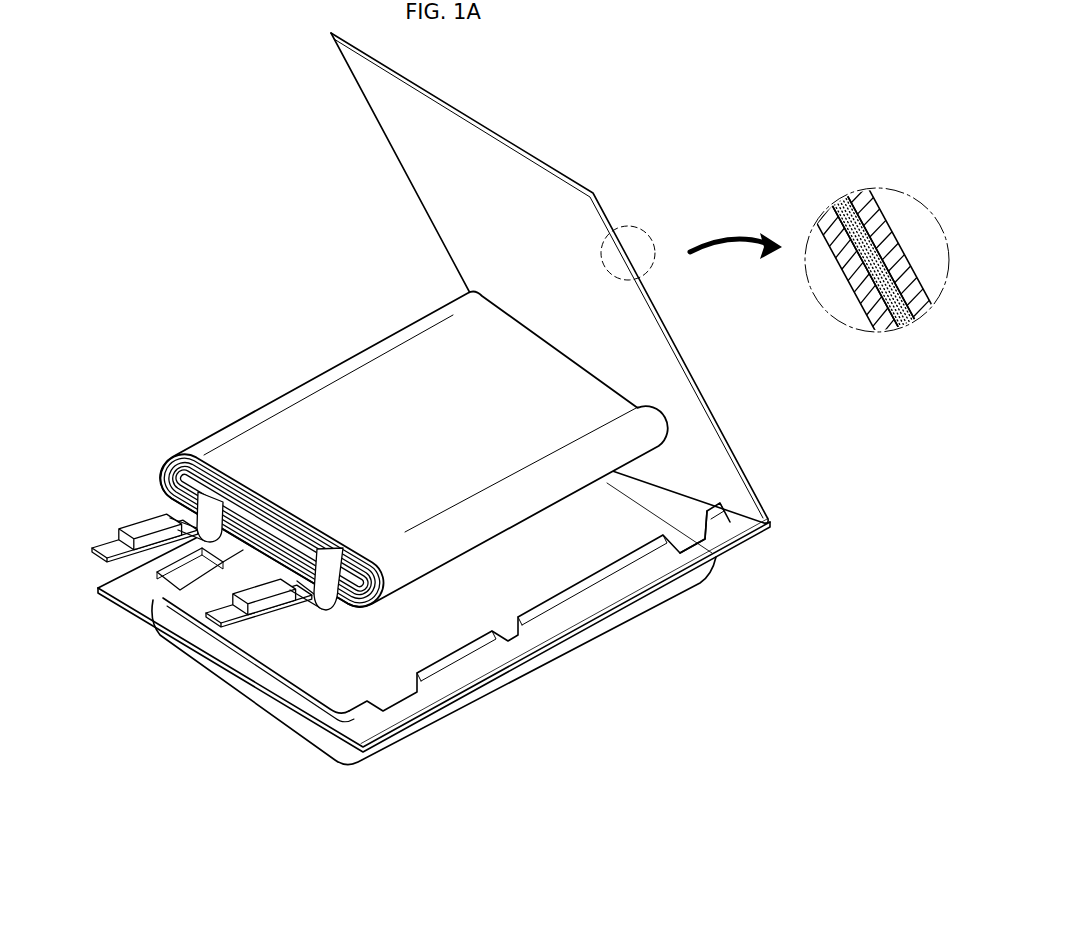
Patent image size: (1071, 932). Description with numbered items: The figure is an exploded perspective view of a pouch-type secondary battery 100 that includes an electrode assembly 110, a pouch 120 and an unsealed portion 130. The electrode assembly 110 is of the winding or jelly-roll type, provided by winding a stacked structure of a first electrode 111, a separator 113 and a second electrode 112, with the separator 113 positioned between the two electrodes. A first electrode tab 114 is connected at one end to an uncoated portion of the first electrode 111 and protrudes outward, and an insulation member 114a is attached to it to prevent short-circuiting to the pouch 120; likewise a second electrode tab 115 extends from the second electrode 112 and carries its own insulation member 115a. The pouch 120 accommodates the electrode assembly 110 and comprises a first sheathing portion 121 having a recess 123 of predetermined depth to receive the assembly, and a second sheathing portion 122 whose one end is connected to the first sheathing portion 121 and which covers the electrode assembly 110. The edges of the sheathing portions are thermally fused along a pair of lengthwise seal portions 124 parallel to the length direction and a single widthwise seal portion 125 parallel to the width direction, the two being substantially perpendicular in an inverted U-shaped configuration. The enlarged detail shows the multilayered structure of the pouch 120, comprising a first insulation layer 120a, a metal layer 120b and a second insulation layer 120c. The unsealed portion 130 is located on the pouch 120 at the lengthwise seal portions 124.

The secondary battery 100 is at (170, 180).
The electrode assembly 110 is at (348, 546).
The first electrode 111 is at (172, 462).
The second electrode 112 is at (168, 483).
The separator 113 is at (168, 462).
The first electrode tab 114 is at (207, 520).
The insulation member 114a is at (140, 522).
The second electrode tab 115 is at (327, 610).
The insulation member 115a is at (273, 602).
The pouch 120 is at (509, 421).
The first insulation layer 120a is at (832, 217).
The metal layer 120b is at (843, 200).
The second insulation layer 120c is at (867, 195).
The first sheathing portion 121 is at (477, 646).
The second sheathing portion 122 is at (753, 472).
The recess 123 is at (468, 628).
The lengthwise seal portions 124 is at (604, 590).
The widthwise seal portion 125 is at (313, 703).
The unsealed portion 130 is at (700, 532).